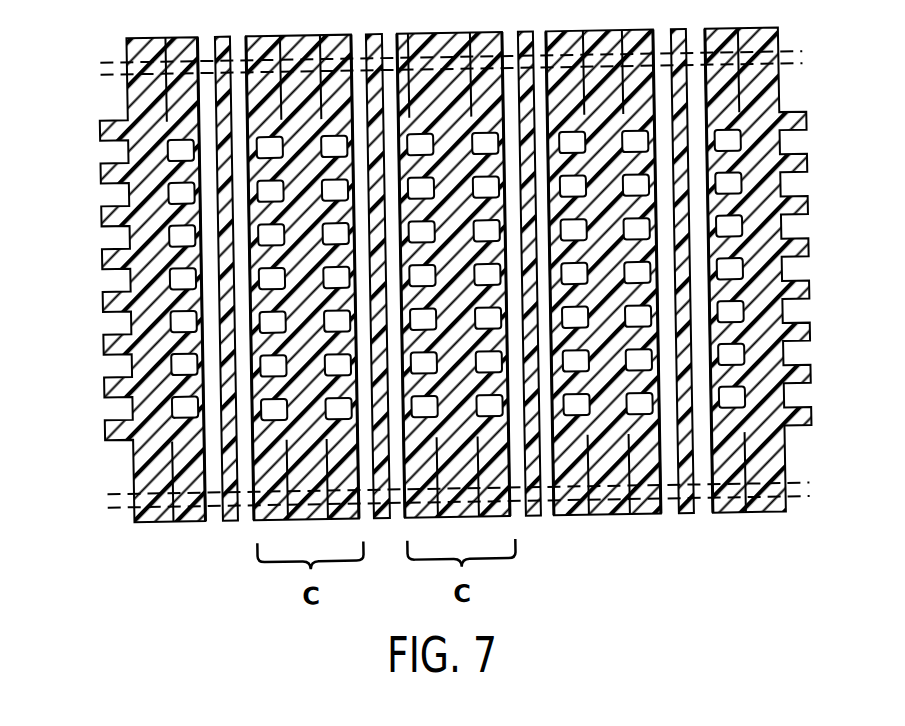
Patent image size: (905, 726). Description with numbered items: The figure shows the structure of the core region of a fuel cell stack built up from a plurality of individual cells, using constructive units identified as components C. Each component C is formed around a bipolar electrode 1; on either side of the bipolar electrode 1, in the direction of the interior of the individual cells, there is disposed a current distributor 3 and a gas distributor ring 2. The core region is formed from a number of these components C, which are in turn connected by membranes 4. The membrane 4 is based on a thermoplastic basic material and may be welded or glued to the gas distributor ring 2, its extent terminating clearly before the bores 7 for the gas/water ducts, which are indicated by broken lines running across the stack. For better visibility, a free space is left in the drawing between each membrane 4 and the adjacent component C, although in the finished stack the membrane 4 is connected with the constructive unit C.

The bipolar electrode 1 is at (768, 466).
The gas distributor ring 2 is at (730, 512).
The current distributor 3 is at (712, 182).
The membrane 4 is at (683, 225).
The bores for the gas/water ducts 7 is at (802, 58).